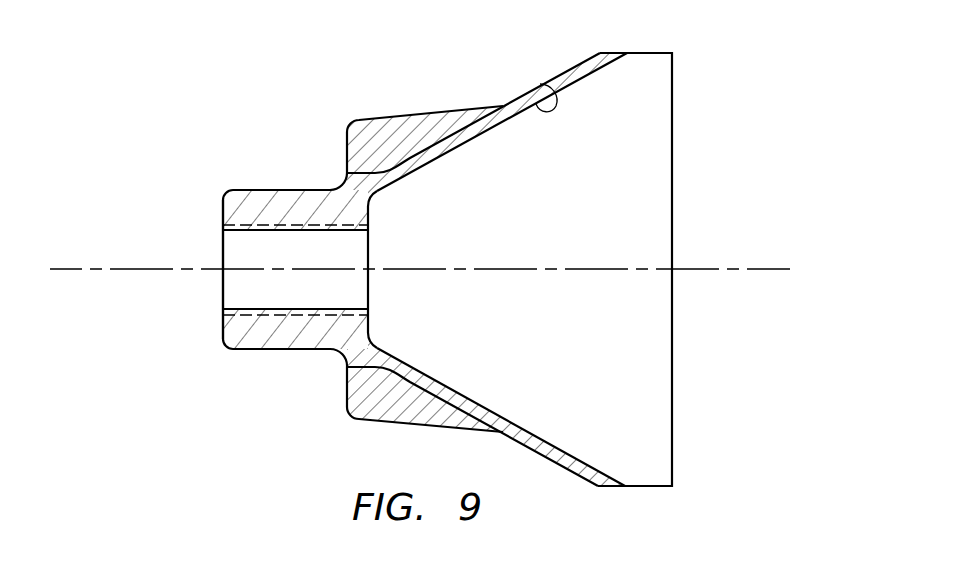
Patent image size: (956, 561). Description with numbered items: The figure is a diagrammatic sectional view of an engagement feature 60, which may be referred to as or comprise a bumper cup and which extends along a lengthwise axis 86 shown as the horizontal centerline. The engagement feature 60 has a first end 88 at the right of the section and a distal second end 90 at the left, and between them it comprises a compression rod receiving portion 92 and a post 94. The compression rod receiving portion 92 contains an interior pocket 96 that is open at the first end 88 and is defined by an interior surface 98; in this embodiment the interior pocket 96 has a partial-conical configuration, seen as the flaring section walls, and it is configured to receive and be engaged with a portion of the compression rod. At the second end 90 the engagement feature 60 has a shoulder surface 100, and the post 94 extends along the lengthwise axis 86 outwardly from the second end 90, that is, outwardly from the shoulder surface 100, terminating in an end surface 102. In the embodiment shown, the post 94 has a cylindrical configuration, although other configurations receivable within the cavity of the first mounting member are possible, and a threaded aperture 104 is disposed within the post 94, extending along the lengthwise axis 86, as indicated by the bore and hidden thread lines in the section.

The engagement feature 60 is at (436, 253).
The lengthwise axis 86 is at (75, 272).
The first end 88 is at (684, 381).
The second end 90 is at (221, 322).
The compression rod receiving portion 92 is at (694, 322).
The post 94 is at (243, 319).
The interior pocket 96 is at (577, 334).
The interior surface 98 is at (552, 88).
The shoulder surface 100 is at (347, 149).
The end surface 102 is at (223, 215).
The threaded aperture 104 is at (317, 262).